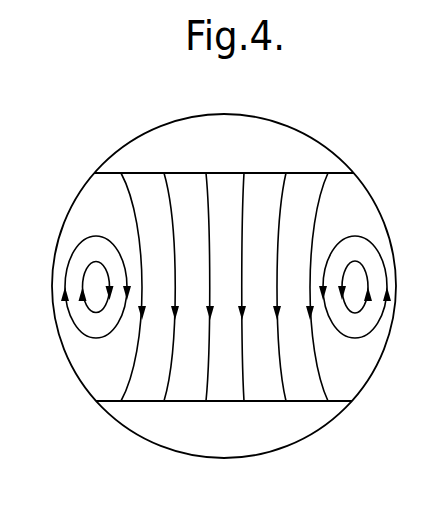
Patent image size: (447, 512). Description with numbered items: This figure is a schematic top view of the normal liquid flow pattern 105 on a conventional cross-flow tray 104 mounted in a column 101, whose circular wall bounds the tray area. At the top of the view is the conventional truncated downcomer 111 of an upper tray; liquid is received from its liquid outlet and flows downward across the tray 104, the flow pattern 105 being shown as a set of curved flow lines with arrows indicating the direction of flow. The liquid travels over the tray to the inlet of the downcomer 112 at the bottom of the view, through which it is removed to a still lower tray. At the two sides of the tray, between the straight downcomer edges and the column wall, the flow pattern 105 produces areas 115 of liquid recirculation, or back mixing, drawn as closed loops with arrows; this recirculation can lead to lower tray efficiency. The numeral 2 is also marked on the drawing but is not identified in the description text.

The plasma processing chamber 2 is at (225, 286).
The column 101 is at (335, 155).
The conventional cross-flow tray 104 is at (98, 200).
The normal flow pattern 105 is at (193, 260).
The truncated downcomer 111 is at (253, 138).
The downcomer 112 is at (257, 435).
The areas of liquid recirculation 115 is at (83, 258).